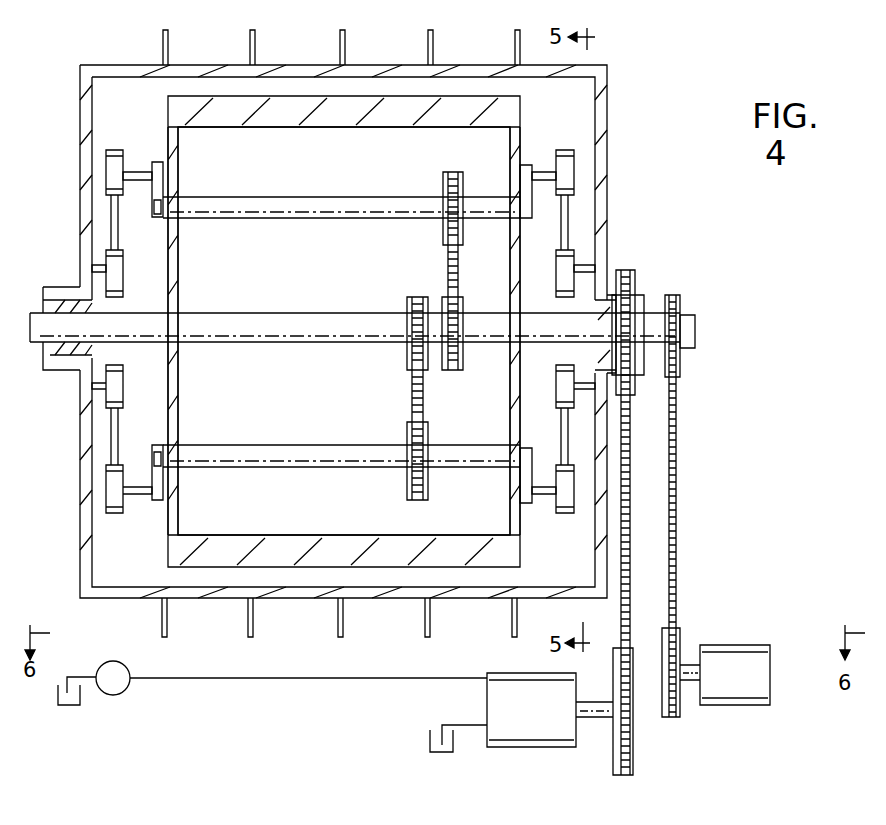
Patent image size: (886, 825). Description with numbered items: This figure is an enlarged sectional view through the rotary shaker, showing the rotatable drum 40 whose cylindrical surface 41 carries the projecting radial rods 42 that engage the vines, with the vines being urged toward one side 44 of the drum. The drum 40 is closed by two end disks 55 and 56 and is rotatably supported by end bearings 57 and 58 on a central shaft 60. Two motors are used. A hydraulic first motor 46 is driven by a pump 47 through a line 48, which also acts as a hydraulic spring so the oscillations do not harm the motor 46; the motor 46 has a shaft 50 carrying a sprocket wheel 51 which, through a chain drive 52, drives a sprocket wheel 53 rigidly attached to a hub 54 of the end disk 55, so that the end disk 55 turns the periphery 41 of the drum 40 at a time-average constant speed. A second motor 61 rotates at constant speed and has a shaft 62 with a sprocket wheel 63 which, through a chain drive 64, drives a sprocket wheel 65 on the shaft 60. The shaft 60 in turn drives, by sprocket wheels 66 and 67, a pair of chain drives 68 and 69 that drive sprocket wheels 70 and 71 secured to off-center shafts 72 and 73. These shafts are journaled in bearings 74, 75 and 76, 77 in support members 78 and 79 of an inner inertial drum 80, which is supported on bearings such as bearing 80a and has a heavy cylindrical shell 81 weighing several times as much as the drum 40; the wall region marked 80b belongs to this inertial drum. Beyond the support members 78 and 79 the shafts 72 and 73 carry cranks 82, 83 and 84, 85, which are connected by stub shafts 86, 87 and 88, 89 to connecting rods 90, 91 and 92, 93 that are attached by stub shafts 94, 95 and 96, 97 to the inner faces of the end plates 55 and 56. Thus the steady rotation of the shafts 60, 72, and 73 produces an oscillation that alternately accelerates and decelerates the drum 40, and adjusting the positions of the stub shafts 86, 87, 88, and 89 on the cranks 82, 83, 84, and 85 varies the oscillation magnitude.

The rotatable drum 40 is at (608, 82).
The cylindrical surface 41 is at (482, 65).
The radial rods 42 is at (342, 52).
The side of the drum 44 is at (80, 118).
The hydraulic first motor 46 is at (500, 745).
The pump 47 is at (125, 694).
The line 48 is at (332, 678).
The shaft 50 is at (590, 718).
The sprocket wheel 51 is at (635, 740).
The chain drive 52 is at (629, 595).
The sprocket wheel 53 is at (637, 280).
The hub 54 is at (640, 380).
The end disk 55 is at (608, 175).
The end disk 56 is at (80, 160).
The end bearing 57 is at (594, 318).
The end bearing 58 is at (92, 311).
The central shaft 60 is at (325, 325).
The second motor 61 is at (770, 658).
The shaft 62 is at (688, 665).
The sprocket wheel 63 is at (680, 700).
The chain drive 64 is at (678, 527).
The sprocket wheel 65 is at (681, 298).
The sprocket wheel 66 is at (463, 358).
The sprocket wheel 67 is at (407, 358).
The chain drive 68 is at (460, 280).
The chain drive 69 is at (410, 395).
The sprocket wheel 70 is at (440, 175).
The sprocket wheel 71 is at (407, 494).
The off-center shaft 72 is at (355, 200).
The off-center shaft 73 is at (306, 448).
The bearing 74 is at (512, 198).
The bearing 75 is at (166, 196).
The bearing 76 is at (510, 446).
The bearing 77 is at (170, 447).
The support member 78 is at (510, 410).
The support member 79 is at (178, 408).
The inertial drum 80 is at (520, 110).
The bearing 80a is at (508, 312).
The tank left wall 80b is at (180, 312).
The heavy cylindrical shell 81 is at (300, 133).
The crank 82 is at (562, 212).
The crank 83 is at (158, 214).
The crank 84 is at (531, 480).
The crank 85 is at (152, 461).
The stub shaft 86 is at (546, 172).
The stub shaft 87 is at (138, 172).
The stub shaft 88 is at (554, 505).
The stub shaft 89 is at (136, 496).
The connecting rod 90 is at (560, 247).
The connecting rod 91 is at (118, 237).
The connecting rod 92 is at (563, 432).
The connecting rod 93 is at (118, 430).
The stub shaft 94 is at (584, 270).
The stub shaft 95 is at (96, 265).
The stub shaft 96 is at (583, 386).
The stub shaft 97 is at (97, 382).